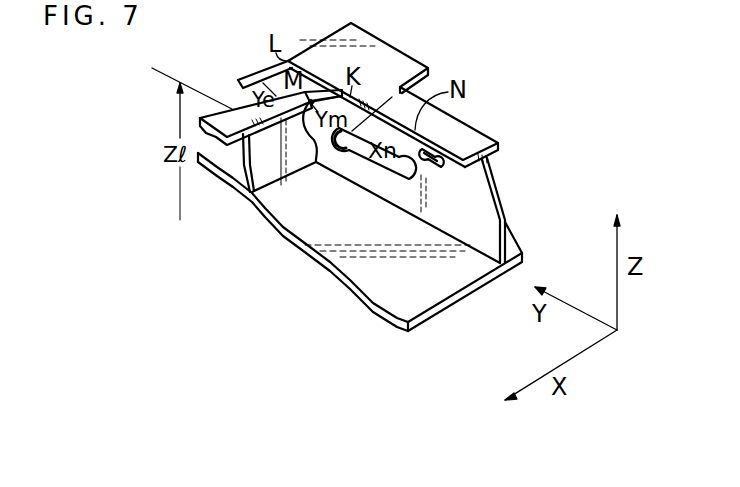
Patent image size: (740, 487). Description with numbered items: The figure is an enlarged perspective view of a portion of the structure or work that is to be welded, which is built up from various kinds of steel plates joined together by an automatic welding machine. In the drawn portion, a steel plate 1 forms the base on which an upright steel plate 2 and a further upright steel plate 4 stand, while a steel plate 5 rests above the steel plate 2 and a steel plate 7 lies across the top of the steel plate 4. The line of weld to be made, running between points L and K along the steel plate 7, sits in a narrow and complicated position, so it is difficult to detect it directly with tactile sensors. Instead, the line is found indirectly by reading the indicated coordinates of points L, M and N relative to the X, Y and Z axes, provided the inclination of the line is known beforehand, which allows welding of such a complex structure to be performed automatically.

The steel plate 1 is at (397, 297).
The steel plate 2 is at (265, 172).
The steel plate 4 is at (470, 192).
The steel plate 5 is at (238, 112).
The steel plate 7 is at (392, 63).